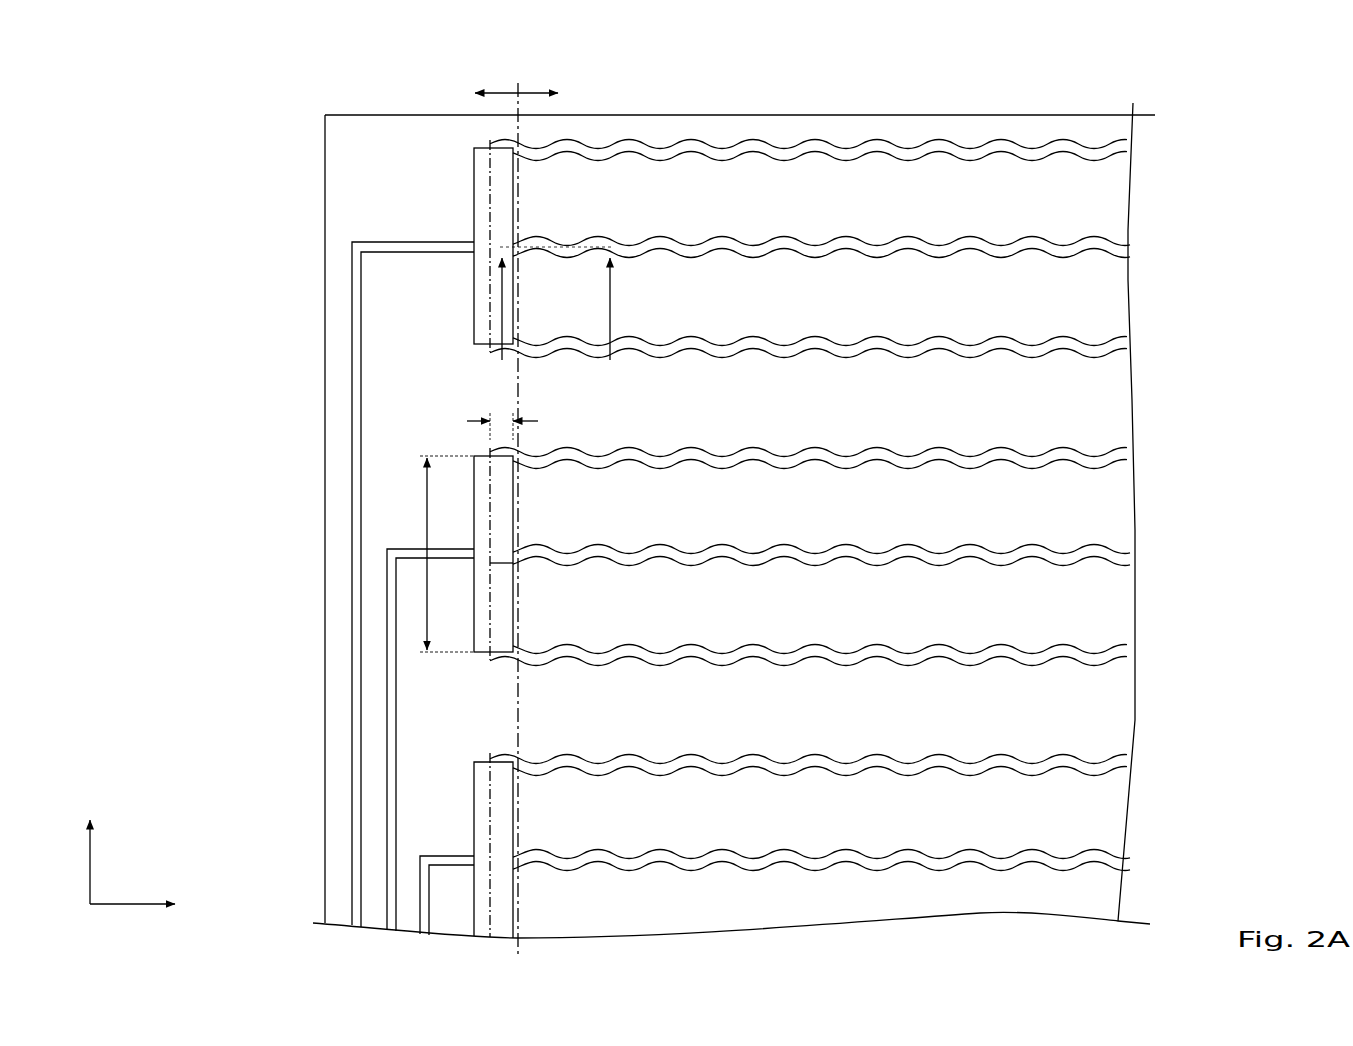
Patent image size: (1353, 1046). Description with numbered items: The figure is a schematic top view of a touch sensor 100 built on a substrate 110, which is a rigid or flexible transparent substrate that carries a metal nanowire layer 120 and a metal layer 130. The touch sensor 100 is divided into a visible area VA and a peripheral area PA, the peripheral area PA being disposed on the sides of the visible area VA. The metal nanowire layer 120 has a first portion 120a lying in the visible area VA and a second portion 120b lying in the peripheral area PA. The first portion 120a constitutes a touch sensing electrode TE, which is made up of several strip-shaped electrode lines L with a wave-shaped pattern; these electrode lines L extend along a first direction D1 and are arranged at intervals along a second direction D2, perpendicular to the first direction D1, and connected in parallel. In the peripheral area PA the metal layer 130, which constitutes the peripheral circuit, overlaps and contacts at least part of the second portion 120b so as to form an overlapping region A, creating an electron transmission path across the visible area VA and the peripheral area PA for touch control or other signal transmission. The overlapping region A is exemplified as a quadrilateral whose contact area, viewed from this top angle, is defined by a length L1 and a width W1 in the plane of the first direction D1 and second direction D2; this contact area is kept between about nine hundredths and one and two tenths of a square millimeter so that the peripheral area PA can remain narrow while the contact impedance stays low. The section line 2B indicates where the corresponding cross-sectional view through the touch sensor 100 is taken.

The touch sensor 100 is at (87, 88).
The substrate 110 is at (1128, 200).
The metal nanowire layer 120 is at (1082, 102).
The first portion of the metal nanowire layer 120a is at (833, 459).
The second portion of the metal nanowire layer 120b is at (437, 509).
The metal layer 130 is at (335, 588).
The electrode lines L is at (833, 121).
The length of the overlapping region L1 is at (427, 538).
The touch sensing electrode TE is at (1032, 134).
The peripheral area PA is at (475, 520).
The visible area VA is at (557, 98).
The line 2B- 2B is at (554, 317).
The width of the overlapping region W1 is at (500, 421).
The overlapping region A is at (501, 550).
The first direction D1 is at (152, 908).
The second direction D2 is at (90, 847).